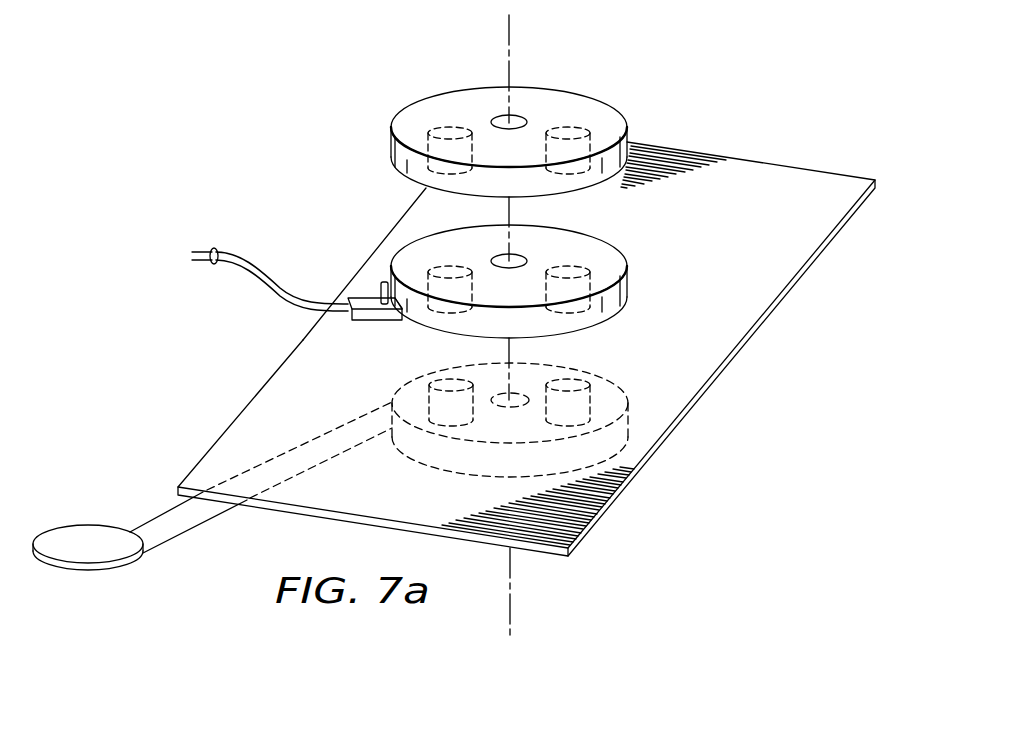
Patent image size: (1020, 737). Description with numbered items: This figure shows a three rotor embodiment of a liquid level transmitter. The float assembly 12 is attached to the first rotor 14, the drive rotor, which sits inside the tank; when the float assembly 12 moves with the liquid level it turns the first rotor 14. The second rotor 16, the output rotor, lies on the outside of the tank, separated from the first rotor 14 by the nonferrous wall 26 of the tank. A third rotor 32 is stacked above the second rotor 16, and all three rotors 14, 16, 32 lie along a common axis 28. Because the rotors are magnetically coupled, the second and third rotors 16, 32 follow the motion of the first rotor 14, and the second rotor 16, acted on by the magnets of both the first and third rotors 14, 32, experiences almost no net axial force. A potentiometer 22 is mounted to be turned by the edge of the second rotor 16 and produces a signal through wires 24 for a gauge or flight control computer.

The float assembly 12 is at (80, 535).
The first rotor 14 is at (415, 447).
The second rotor 16 is at (602, 252).
The potentiometer 22 is at (363, 303).
The wires 24 is at (215, 251).
The nonferrous wall 26 is at (765, 230).
The axis 28 is at (508, 46).
The third rotor 32 is at (583, 108).